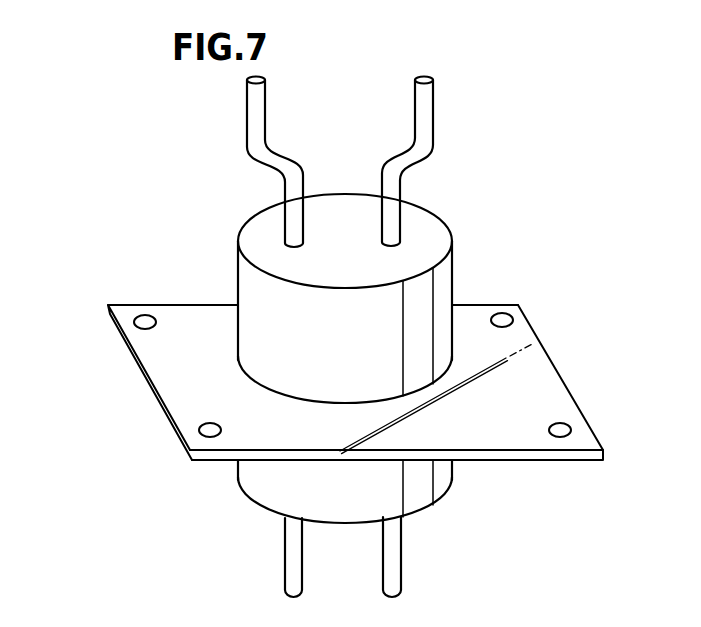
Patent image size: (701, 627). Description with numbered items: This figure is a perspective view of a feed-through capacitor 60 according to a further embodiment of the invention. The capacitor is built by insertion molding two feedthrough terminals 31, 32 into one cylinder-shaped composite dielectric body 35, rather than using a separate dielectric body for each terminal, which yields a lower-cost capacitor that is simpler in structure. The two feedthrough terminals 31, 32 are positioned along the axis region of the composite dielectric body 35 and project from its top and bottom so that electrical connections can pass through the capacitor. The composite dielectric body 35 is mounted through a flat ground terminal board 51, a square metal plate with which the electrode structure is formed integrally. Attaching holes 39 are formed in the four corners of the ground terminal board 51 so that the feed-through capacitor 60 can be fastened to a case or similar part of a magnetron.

The feedthrough terminal 31 is at (258, 114).
The feedthrough terminal 32 is at (421, 108).
The composite dielectric body 35 is at (445, 283).
The attaching holes 39 is at (140, 316).
The ground terminal board 51 is at (518, 384).
The feed-through capacitor 60 is at (113, 414).